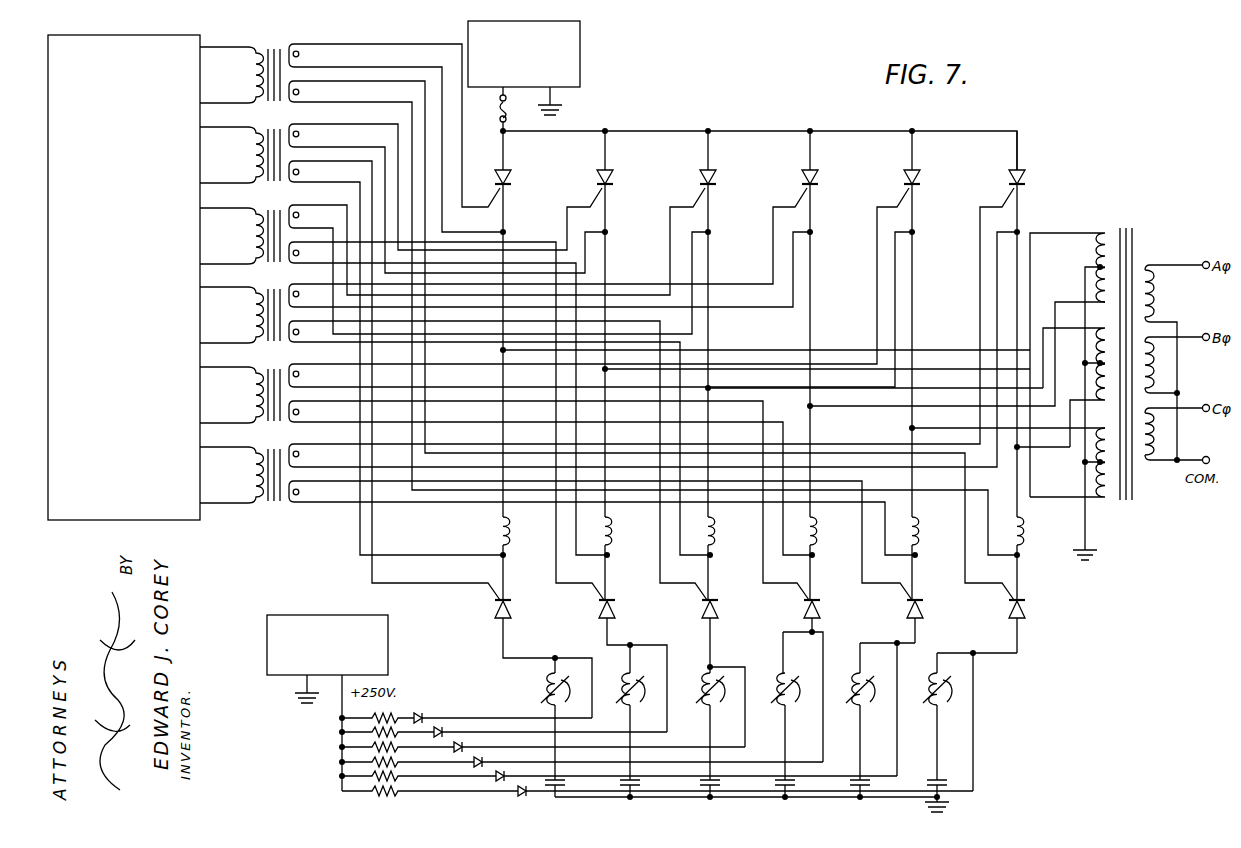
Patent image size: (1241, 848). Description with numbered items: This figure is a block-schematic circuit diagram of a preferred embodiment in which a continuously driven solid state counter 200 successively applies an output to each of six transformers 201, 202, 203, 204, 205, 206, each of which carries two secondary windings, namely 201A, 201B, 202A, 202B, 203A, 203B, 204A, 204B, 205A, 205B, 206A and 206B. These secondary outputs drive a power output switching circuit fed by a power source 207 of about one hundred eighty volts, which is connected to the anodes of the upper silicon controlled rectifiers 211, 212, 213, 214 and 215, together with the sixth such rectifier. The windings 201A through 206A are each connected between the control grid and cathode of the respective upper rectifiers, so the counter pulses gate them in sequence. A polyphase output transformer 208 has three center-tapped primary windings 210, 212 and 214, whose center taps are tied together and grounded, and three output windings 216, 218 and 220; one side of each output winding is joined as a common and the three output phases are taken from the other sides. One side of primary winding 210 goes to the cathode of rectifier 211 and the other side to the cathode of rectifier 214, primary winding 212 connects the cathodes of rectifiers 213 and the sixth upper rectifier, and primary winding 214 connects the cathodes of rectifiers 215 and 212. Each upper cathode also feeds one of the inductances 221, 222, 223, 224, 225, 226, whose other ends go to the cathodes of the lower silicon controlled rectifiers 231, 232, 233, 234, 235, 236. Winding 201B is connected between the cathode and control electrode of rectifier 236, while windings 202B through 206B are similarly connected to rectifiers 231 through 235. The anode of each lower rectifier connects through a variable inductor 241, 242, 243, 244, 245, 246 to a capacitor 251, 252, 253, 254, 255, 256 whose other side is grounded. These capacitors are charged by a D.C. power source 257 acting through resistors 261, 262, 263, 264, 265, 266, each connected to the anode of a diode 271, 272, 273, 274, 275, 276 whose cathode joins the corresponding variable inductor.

The solid state counter 200 is at (180, 520).
The transformer 201 is at (273, 42).
The transformer 202 is at (273, 122).
The transformer 203 is at (273, 203).
The transformer 204 is at (273, 282).
The transformer 205 is at (273, 362).
The transformer 206 is at (273, 442).
The secondary winding 201A is at (299, 54).
The secondary winding 201B is at (299, 92).
The secondary winding 202A is at (299, 134).
The secondary winding 202B is at (299, 172).
The secondary winding 203A is at (498, 261).
The secondary winding 203B is at (448, 421).
The secondary winding 204A is at (549, 256).
The secondary winding 204B is at (499, 460).
The secondary winding 205A is at (299, 374).
The secondary winding 205B is at (299, 412).
The secondary winding 206A is at (299, 454).
The secondary winding 206B is at (299, 492).
The power source 207 is at (583, 48).
The polyphase output transformer 208 is at (1131, 227).
The primary winding 210 is at (1097, 248).
The silicon controlled rectifier / primary winding 212 is at (614, 178).
The silicon controlled rectifier / primary winding 214 is at (819, 178).
The silicon controlled rectifier / output winding 216 is at (1026, 178).
The output winding 218 is at (1152, 366).
The output winding 220 is at (1150, 455).
The silicon controlled rectifier 211 is at (512, 178).
The silicon controlled rectifier 213 is at (717, 178).
The silicon controlled rectifier 215 is at (921, 178).
The inductance 221 is at (497, 523).
The inductance 222 is at (611, 535).
The inductance 223 is at (714, 535).
The inductance 224 is at (837, 518).
The inductance 225 is at (918, 532).
The inductance 226 is at (1023, 521).
The silicon controlled rectifier 231 is at (494, 613).
The silicon controlled rectifier 232 is at (598, 613).
The silicon controlled rectifier 233 is at (701, 613).
The silicon controlled rectifier 234 is at (803, 613).
The silicon controlled rectifier 235 is at (906, 613).
The silicon controlled rectifier 236 is at (1008, 613).
The variable inductor 241 is at (543, 686).
The variable inductor 242 is at (637, 726).
The variable inductor 243 is at (717, 726).
The variable inductor 244 is at (792, 726).
The variable inductor 245 is at (867, 726).
The variable inductor 246 is at (944, 726).
The capacitor 251 is at (565, 783).
The capacitor 252 is at (640, 783).
The capacitor 253 is at (720, 783).
The capacitor 254 is at (795, 783).
The capacitor 255 is at (870, 783).
The capacitor 256 is at (947, 783).
The D.C. power source 257 is at (347, 598).
The resistor 261 is at (398, 716).
The resistor 262 is at (365, 732).
The resistor 263 is at (365, 747).
The resistor 264 is at (365, 762).
The resistor 265 is at (375, 793).
The resistor 266 is at (395, 797).
The diode 271 is at (420, 712).
The diode 272 is at (445, 736).
The diode 273 is at (462, 750).
The diode 274 is at (482, 766).
The diode 275 is at (504, 780).
The diode 276 is at (518, 796).